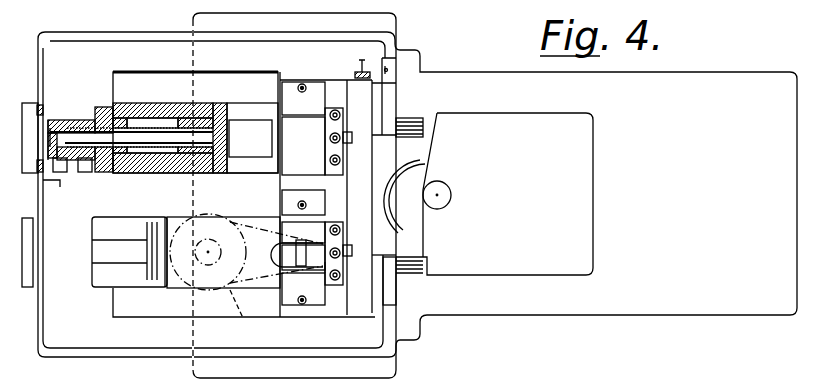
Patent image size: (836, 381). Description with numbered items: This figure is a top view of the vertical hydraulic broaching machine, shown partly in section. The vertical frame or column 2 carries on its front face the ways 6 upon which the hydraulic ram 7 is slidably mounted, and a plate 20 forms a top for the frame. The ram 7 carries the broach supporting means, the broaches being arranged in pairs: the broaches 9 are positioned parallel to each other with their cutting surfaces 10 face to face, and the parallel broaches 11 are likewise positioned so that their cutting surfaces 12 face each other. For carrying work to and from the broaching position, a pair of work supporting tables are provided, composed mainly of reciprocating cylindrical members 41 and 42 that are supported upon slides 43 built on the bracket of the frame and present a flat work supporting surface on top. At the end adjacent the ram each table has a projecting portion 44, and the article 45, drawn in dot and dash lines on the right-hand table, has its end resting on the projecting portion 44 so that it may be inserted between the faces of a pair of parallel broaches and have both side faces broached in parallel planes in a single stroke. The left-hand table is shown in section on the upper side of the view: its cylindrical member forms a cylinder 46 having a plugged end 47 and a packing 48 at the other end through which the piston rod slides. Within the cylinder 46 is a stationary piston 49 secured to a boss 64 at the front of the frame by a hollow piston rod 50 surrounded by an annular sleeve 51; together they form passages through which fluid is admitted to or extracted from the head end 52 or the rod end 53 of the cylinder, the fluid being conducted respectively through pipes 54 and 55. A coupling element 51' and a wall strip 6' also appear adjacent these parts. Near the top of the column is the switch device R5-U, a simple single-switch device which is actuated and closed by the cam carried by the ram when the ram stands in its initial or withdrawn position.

The vertical frame or column 2 is at (83, 352).
The ways 6 is at (397, 280).
The wall strip 6' is at (395, 96).
The hydraulic ram 7 is at (382, 242).
The broaches 9 is at (292, 110).
The cutting surfaces 10 is at (308, 157).
The parallel broaches 11 is at (293, 280).
The cutting surfaces 12 is at (308, 268).
The plate 20 is at (580, 237).
The reciprocating cylindrical member 41 is at (137, 103).
The reciprocating cylindrical member 42 is at (173, 290).
The slides 43 is at (100, 225).
The projecting portion 44 is at (257, 157).
The article 45 is at (238, 316).
The cylinder 46 is at (163, 103).
The plugged end 47 is at (230, 110).
The packing 48 is at (107, 107).
The stationary piston 49 is at (202, 117).
The hollow piston rod 50 is at (73, 120).
The annular sleeve 51 is at (131, 108).
The shaft coupling 51' is at (111, 253).
The head end 52 is at (213, 107).
The rod end 53 is at (152, 155).
The pipe 54 is at (55, 186).
The pipe 55 is at (84, 168).
The boss 64 is at (58, 118).
The switch device RS-U R5-U is at (392, 70).